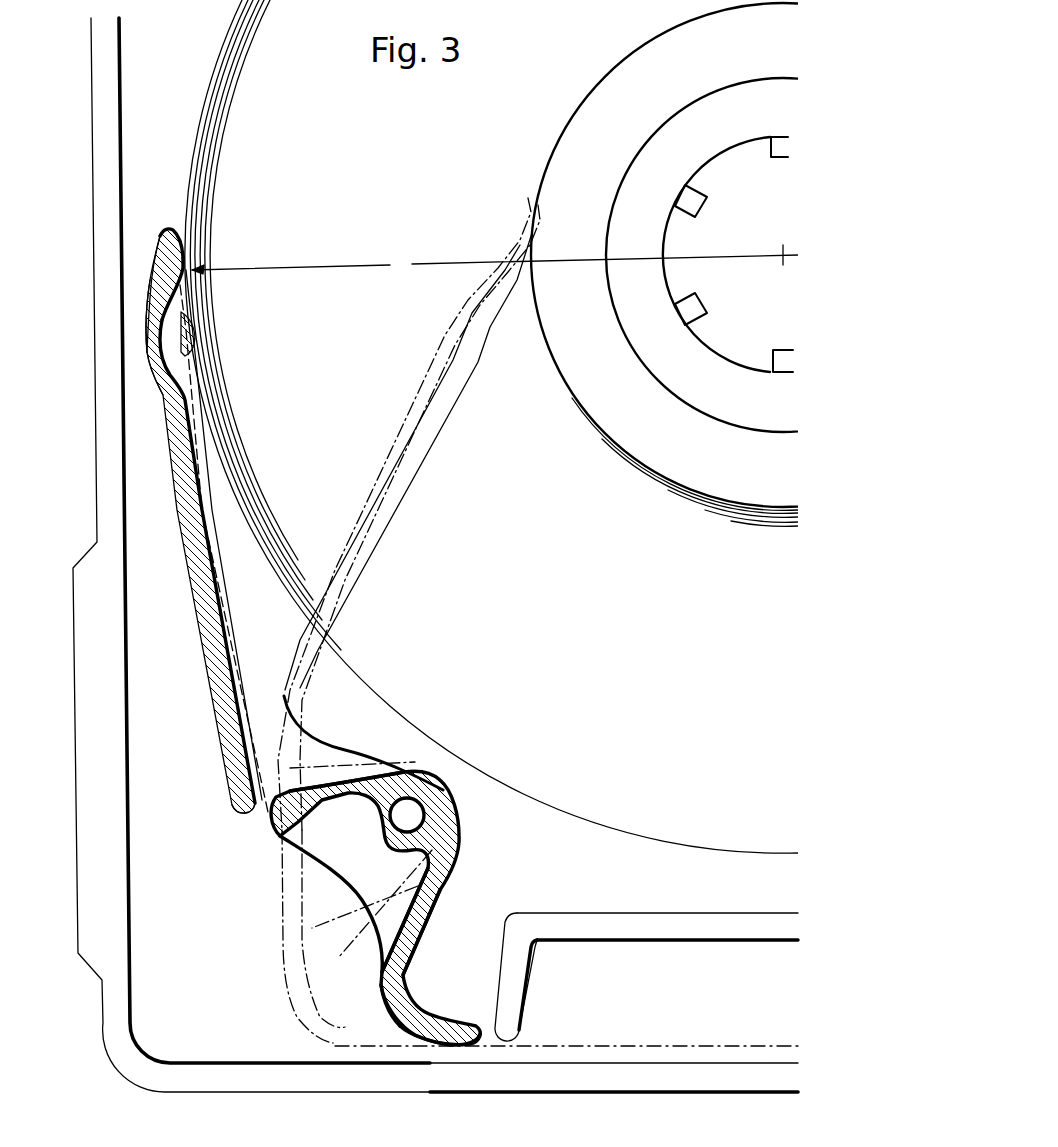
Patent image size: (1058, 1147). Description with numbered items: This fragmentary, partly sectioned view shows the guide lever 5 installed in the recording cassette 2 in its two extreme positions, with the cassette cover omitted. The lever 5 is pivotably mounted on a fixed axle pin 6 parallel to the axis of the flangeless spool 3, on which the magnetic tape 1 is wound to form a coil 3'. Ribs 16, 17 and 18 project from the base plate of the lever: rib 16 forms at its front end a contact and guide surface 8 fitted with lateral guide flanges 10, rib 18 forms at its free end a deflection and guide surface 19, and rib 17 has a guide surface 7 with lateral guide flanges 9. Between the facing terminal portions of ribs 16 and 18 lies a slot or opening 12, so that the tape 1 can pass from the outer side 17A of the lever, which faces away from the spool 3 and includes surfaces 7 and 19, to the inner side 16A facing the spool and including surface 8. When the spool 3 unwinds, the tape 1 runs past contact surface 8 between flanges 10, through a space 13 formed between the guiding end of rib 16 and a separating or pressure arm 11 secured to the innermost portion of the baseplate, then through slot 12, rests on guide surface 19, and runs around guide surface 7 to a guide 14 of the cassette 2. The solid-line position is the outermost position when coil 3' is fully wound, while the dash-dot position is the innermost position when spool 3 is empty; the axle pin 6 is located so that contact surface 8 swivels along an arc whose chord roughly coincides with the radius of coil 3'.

The magnetic tape 1 is at (645, 1046).
The recording cassette 2 is at (145, 495).
The spool 3 is at (613, 255).
The coil 3' is at (484, 426).
The lever 5 is at (170, 502).
The axle pin 6 is at (358, 909).
The guide surface 7 is at (408, 1025).
The contact and guide surface 8 is at (163, 251).
The lateral guide flange 9 is at (386, 1010).
The lateral guide flange 10 is at (178, 243).
The separating or pressure arm 11 is at (187, 334).
The slot or opening 12 is at (276, 826).
The space 13 is at (172, 340).
The guide 14 is at (505, 1028).
The rib 16 is at (203, 558).
The inner side 16A is at (268, 716).
The rib 17 is at (404, 992).
The outer side 17A is at (340, 957).
The rib 18 is at (344, 792).
The deflection and guide surface 19 is at (280, 838).